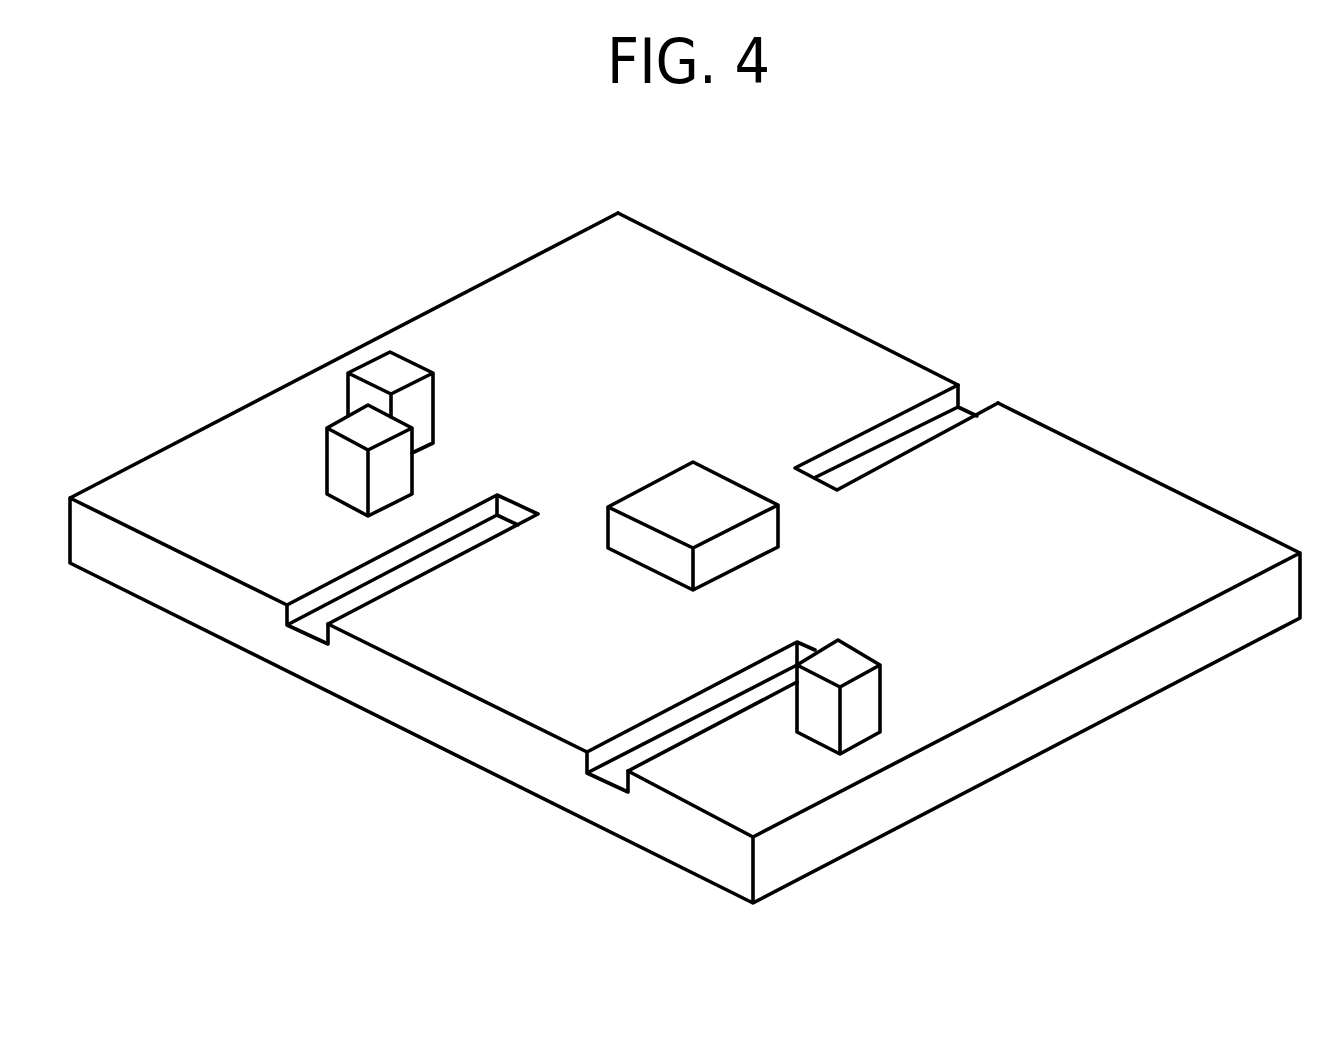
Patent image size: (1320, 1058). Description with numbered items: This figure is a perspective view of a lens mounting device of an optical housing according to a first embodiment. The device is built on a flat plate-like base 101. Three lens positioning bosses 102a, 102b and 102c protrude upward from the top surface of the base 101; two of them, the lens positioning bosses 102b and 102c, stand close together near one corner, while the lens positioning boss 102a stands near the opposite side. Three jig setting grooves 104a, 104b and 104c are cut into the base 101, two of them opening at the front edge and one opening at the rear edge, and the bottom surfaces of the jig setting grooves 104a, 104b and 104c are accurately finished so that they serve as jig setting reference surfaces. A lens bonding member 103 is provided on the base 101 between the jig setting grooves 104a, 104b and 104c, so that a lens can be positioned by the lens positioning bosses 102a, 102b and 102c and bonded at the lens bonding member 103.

The base 101 is at (1068, 652).
The lens positioning boss 102a is at (863, 695).
The lens positioning boss 102b is at (337, 457).
The lens positioning boss 102c is at (403, 367).
The lens bonding member 103 is at (703, 483).
The jig setting groove 104a is at (698, 723).
The jig setting groove 104b is at (478, 537).
The jig setting groove 104c is at (870, 460).